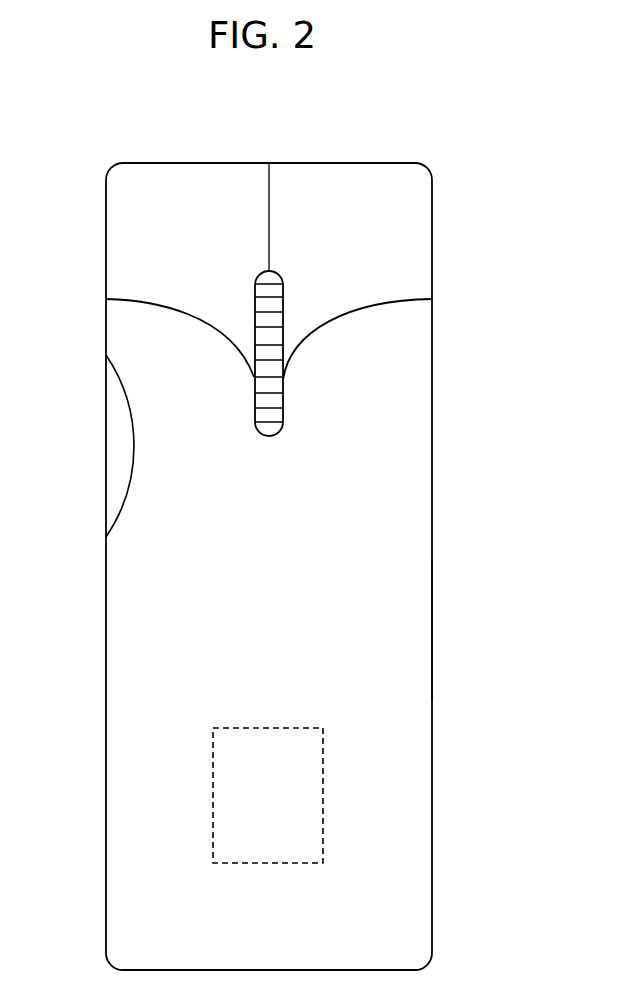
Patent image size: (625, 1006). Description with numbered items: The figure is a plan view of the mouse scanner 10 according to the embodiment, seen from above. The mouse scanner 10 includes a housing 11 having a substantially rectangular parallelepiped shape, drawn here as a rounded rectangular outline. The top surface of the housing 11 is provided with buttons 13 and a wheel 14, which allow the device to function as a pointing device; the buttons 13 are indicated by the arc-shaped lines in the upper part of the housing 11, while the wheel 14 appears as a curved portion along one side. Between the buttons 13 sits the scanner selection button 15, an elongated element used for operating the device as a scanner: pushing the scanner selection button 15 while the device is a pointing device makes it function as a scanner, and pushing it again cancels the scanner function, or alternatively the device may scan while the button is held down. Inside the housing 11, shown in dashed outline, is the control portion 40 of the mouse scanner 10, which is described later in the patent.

The mouse scanner 10 is at (452, 564).
The housing 11 is at (422, 686).
The buttons 13 is at (222, 192).
The wheel 14 is at (110, 427).
The scanner selection button 15 is at (277, 399).
The control portion 40 is at (213, 778).